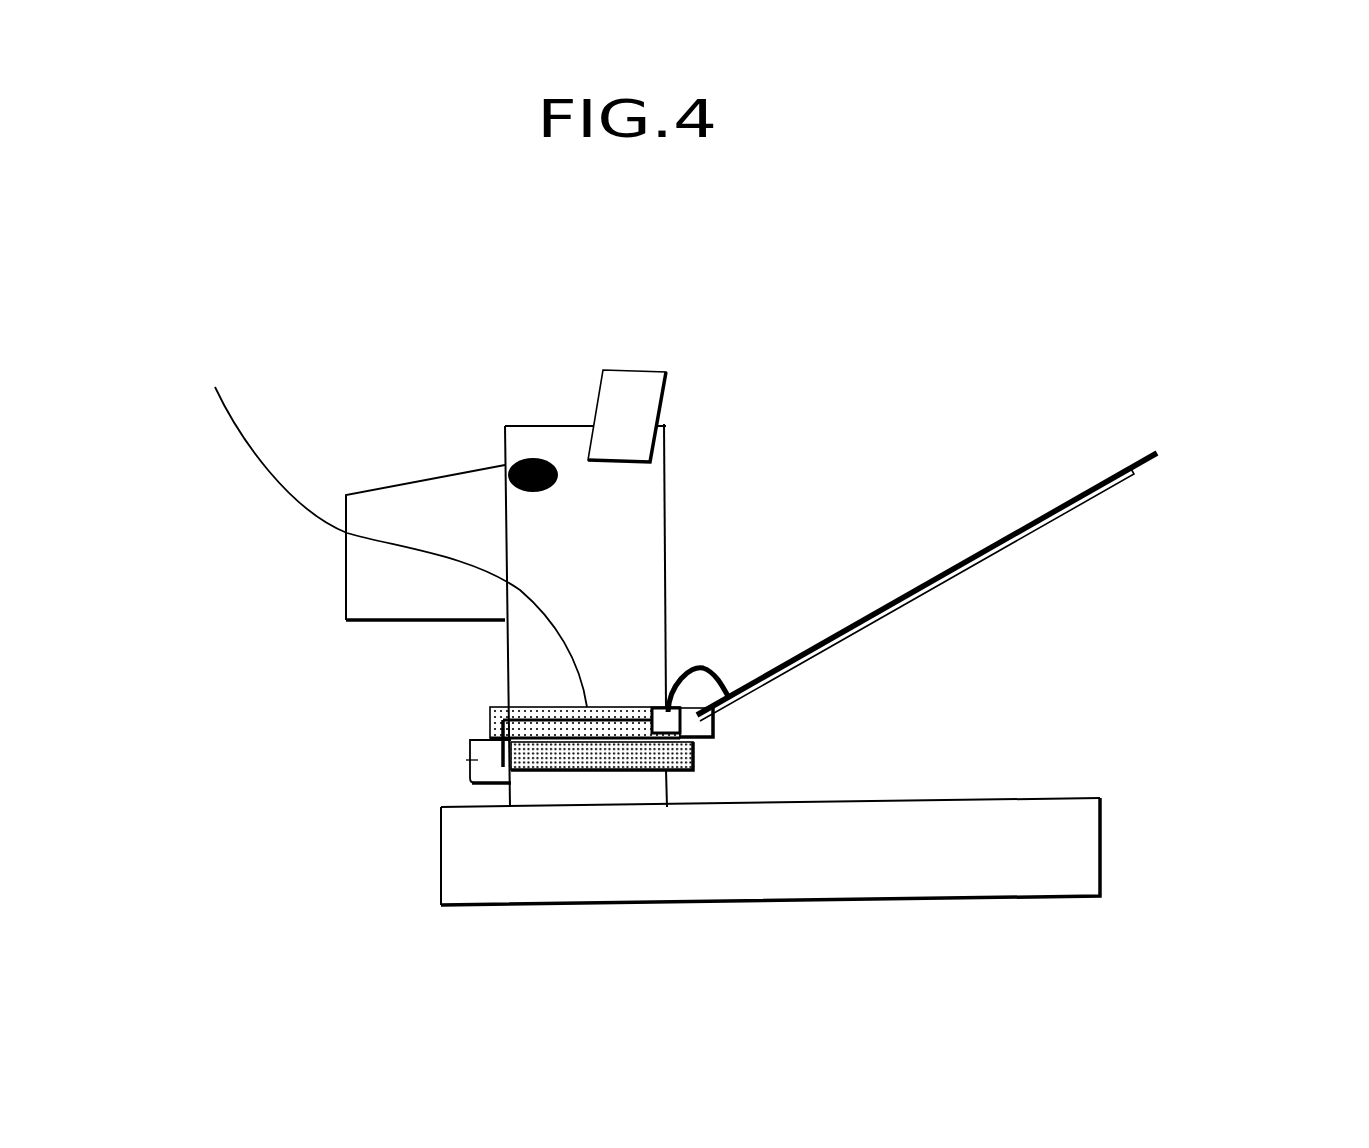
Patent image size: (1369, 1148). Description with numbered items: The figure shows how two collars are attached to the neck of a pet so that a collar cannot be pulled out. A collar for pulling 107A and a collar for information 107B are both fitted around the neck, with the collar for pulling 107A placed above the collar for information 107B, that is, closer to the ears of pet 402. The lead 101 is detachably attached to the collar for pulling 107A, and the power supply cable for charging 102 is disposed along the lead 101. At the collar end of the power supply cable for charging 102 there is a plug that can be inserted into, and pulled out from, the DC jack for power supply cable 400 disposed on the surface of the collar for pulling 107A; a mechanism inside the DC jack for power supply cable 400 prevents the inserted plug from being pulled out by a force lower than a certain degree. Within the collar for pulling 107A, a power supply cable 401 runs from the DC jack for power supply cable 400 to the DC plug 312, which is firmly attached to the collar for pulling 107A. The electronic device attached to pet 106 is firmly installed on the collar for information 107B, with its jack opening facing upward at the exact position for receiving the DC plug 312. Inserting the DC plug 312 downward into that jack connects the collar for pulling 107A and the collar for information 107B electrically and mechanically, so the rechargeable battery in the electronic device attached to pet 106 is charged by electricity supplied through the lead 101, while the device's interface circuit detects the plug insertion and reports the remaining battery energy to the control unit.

The lead 101 is at (1017, 537).
The power supply cable for charging 102 is at (1044, 508).
The electronic device attached to pet 106 is at (466, 760).
The collar for pulling 107A is at (488, 718).
The collar for information 107B is at (695, 760).
The DC plug 312 is at (467, 749).
The DC jack for power supply cable 400 is at (657, 713).
The power supply cable 401 is at (348, 525).
The ears of pet 402 is at (665, 317).